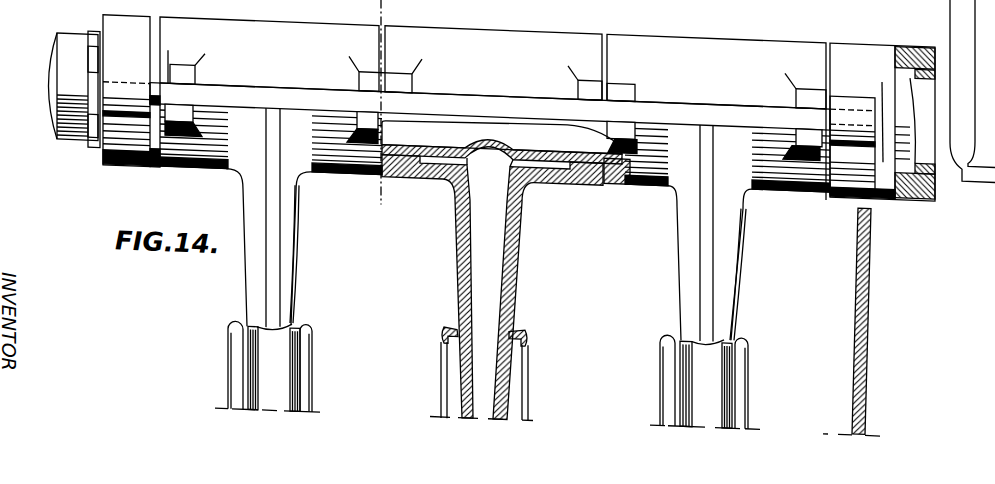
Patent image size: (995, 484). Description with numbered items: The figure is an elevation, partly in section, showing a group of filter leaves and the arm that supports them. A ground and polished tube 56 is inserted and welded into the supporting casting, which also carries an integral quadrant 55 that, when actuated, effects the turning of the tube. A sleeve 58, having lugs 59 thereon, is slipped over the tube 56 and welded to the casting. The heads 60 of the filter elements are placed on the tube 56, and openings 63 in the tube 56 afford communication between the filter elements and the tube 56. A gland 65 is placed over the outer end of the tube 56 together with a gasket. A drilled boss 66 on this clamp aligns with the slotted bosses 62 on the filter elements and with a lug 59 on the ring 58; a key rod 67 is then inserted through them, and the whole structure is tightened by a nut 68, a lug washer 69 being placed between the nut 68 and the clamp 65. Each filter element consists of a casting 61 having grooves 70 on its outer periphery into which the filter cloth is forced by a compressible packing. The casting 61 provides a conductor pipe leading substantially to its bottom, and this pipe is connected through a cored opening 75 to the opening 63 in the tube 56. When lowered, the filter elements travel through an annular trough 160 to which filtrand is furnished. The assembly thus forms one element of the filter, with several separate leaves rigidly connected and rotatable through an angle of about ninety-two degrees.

The quadrant 55 is at (960, 91).
The ground and polished tube 56 is at (552, 143).
The sleeve 58 is at (882, 19).
The lugs 59 is at (857, 73).
The heads 60 is at (292, 23).
The casting 61 is at (312, 334).
The slotted bosses 62 is at (196, 71).
The openings 63 is at (503, 136).
The gland 65 is at (102, 162).
The drilled boss 66 is at (128, 73).
The key rod 67 is at (305, 89).
The nut 68 is at (62, 66).
The lug washer 69 is at (97, 35).
The grooves 70 is at (246, 373).
The cored opening 75 is at (302, 264).
The annular trough 160 is at (865, 275).